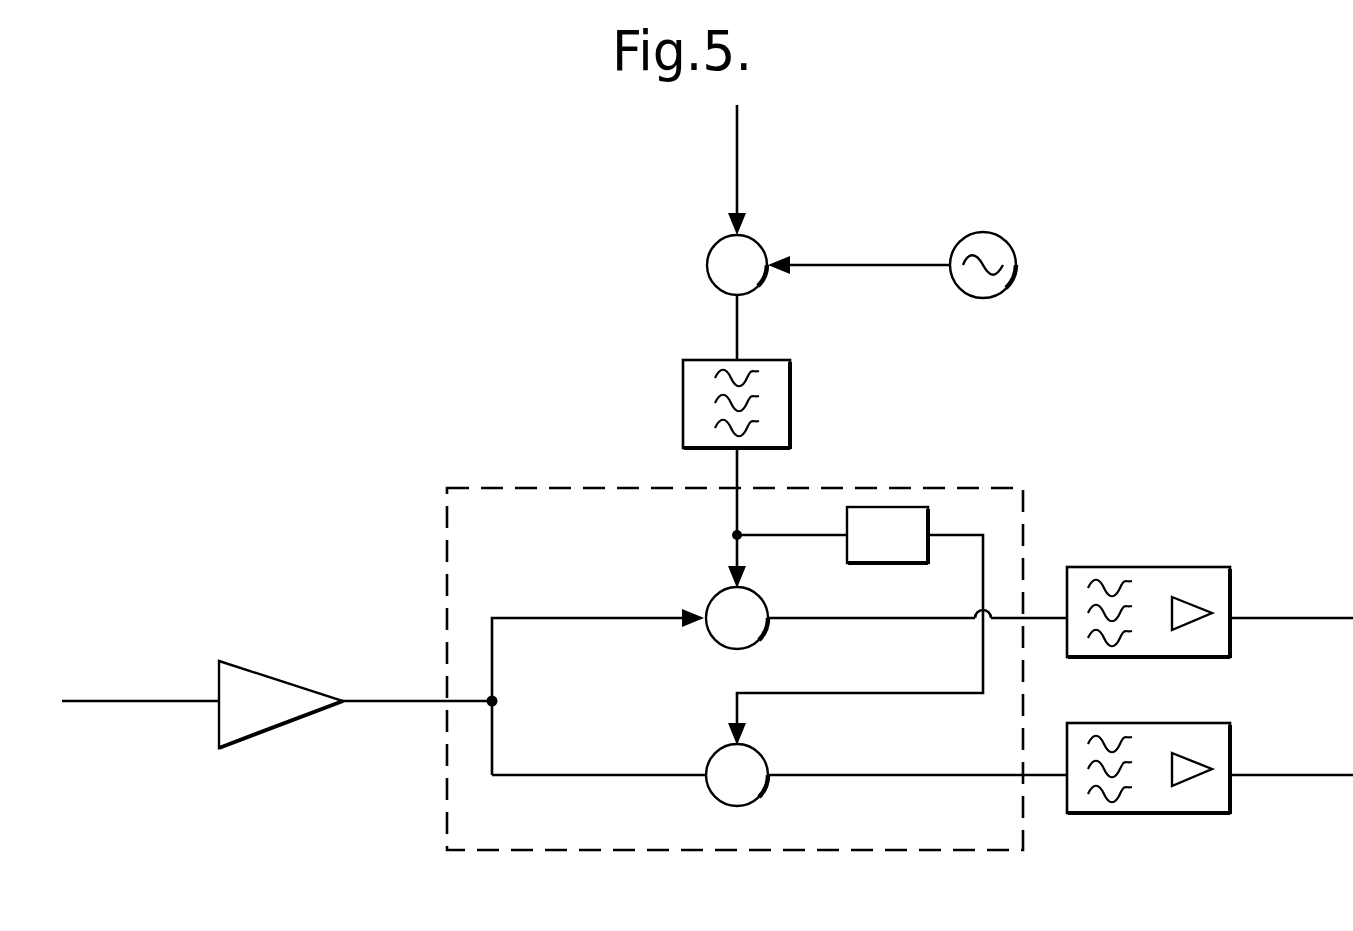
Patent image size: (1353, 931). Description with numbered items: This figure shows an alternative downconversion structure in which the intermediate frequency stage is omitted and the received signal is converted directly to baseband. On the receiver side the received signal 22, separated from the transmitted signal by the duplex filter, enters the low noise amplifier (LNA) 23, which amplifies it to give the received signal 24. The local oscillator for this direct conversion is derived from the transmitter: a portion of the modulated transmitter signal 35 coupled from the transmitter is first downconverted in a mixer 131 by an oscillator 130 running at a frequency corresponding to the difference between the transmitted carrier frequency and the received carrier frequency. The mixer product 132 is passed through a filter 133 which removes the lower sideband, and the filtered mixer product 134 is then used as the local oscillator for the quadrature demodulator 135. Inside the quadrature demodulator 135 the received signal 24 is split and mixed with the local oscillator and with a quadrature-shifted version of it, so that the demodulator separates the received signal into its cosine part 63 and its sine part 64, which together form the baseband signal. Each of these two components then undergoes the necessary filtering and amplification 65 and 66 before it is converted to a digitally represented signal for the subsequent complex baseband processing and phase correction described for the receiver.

The received signal 22 is at (160, 703).
The low noise amplifier (LNA) 23 is at (282, 735).
The received signal 24 is at (421, 703).
The portion of the modulated transmitter signal 35 is at (737, 174).
The cosine part of the received signal 63 is at (1040, 617).
The sine part of the received signal 64 is at (1040, 774).
The filtering and amplification 65 is at (1172, 567).
The filtering and amplification 66 is at (1172, 723).
The local oscillator f2-f1 130 is at (989, 233).
The mixer 131 is at (714, 243).
The mixer output line 132 is at (737, 338).
The bandpass filter 133 is at (834, 376).
The filter output line 134 is at (737, 471).
The quadrature demodulator block 135 is at (527, 487).